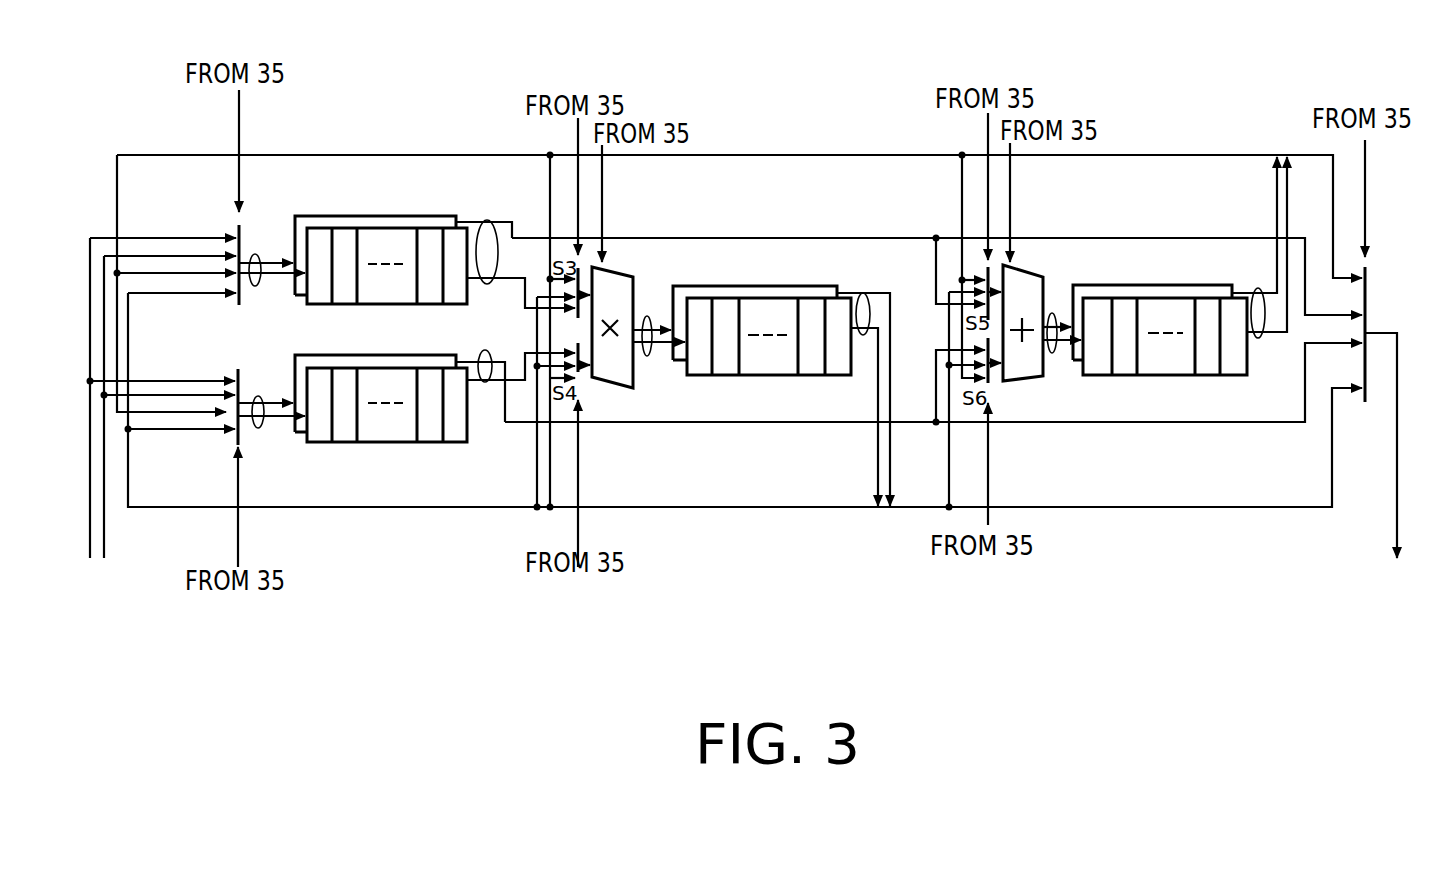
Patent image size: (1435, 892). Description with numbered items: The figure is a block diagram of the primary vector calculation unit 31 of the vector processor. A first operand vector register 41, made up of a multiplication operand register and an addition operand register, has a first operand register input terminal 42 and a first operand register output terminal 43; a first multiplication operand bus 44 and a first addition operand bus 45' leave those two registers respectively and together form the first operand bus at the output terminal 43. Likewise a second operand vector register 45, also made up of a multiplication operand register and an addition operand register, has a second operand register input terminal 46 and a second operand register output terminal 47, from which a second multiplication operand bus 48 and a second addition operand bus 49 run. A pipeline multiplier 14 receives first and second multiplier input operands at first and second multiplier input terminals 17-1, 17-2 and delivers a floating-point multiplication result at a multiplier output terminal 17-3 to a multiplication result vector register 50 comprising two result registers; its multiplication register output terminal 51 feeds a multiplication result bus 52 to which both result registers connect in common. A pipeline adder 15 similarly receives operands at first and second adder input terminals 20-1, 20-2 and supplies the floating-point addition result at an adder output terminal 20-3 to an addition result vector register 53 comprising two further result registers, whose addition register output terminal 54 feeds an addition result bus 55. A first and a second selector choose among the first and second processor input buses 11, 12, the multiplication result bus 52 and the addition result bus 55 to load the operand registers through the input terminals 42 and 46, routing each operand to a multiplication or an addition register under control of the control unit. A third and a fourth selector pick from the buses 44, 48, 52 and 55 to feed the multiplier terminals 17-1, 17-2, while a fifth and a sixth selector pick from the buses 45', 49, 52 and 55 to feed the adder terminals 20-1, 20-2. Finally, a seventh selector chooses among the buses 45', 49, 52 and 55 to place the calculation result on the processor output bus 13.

The first processor input bus 11 is at (88, 545).
The second processor input bus 12 is at (105, 538).
The processor output bus 13 is at (1395, 545).
The pipeline multiplier 14 is at (636, 390).
The pipeline adder 15 is at (1004, 265).
The first multiplier input terminal 17-1 is at (590, 293).
The second multiplier input terminal 17-2 is at (585, 365).
The multiplier output terminal 17-3 is at (645, 315).
The first adder input terminal 20-1 is at (990, 292).
The second adder input terminal 20-2 is at (990, 363).
The adder output terminal 20-3 is at (1052, 313).
The primary vector calculation unit 31 is at (1194, 146).
The first operand vector register 41 is at (452, 209).
The first operand register input terminal 42 is at (258, 245).
The first operand register output terminal 43 is at (487, 221).
The first multiplication operand bus 44 is at (505, 286).
The second operand vector register 45 is at (416, 483).
The first addition operand bus 45' is at (937, 247).
The second operand register input terminal 46 is at (260, 395).
The second operand register output terminal 47 is at (490, 384).
The second multiplication operand bus 48 is at (512, 378).
The second addition operand bus 49 is at (845, 423).
The multiplication result vector register 50 is at (769, 282).
The multiplication register output terminal 51 is at (866, 293).
The multiplication result bus 52 is at (438, 512).
The addition result vector register 53 is at (1085, 381).
The addition register output terminal 54 is at (1256, 288).
The addition result bus 55 is at (393, 155).